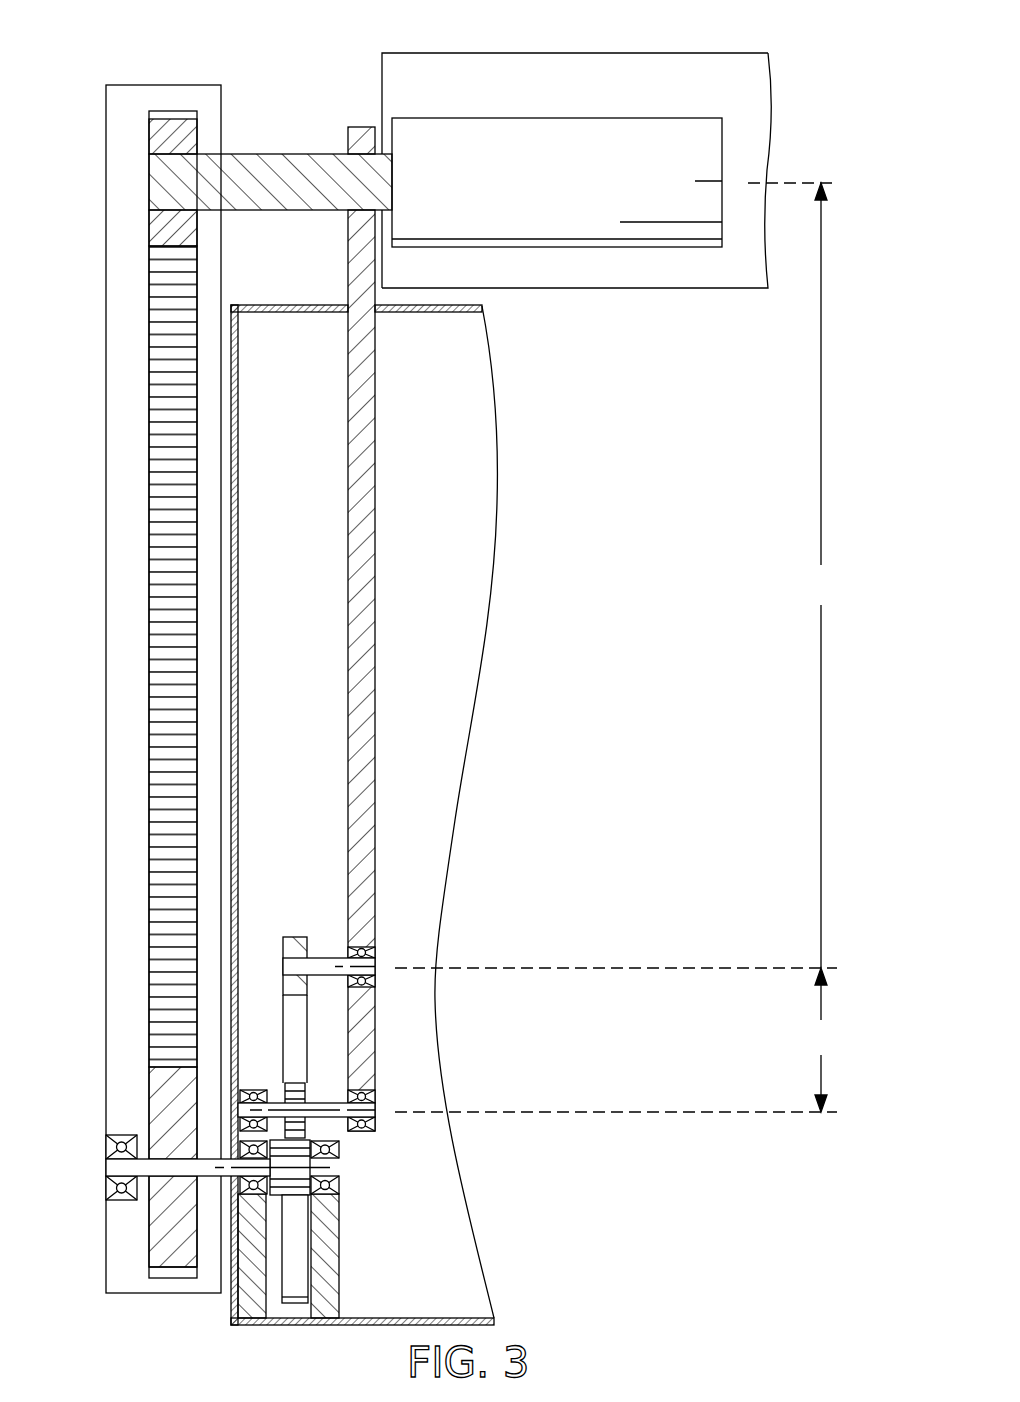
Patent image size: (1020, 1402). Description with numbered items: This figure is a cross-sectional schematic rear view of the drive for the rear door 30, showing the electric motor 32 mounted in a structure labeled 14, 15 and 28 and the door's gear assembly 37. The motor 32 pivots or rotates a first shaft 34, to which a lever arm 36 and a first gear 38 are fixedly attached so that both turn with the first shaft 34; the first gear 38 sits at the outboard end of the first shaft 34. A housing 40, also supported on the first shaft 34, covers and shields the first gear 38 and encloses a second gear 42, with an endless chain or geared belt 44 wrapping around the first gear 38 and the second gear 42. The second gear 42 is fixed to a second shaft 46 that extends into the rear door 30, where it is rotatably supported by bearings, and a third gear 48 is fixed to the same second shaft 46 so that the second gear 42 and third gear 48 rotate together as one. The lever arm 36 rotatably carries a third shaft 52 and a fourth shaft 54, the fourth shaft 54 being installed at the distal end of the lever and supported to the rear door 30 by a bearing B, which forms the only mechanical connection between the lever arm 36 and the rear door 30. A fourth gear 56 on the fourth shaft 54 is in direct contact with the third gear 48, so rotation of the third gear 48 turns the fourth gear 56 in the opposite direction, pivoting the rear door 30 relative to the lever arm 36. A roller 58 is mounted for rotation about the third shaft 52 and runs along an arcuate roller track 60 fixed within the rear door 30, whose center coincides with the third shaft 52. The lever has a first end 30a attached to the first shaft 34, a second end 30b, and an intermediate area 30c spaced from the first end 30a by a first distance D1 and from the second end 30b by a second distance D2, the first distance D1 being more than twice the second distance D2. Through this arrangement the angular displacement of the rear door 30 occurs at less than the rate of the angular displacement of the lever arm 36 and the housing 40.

The imaging apparatus 14 is at (688, 47).
The housing 15 is at (592, 52).
The wall 28 is at (772, 82).
The rear door 30 is at (444, 578).
The first end 30a is at (363, 140).
The second end 30b is at (366, 1133).
The intermediate area 30c is at (375, 938).
The electric motor 32 is at (497, 160).
The first shaft 34 is at (278, 185).
The lever arm 36 is at (360, 486).
The gear assembly 37 is at (383, 1033).
The first gear 38 is at (165, 135).
The housing 40 is at (106, 341).
The second gear 42 is at (172, 1097).
The geared belt 44 is at (157, 738).
The second shaft 46 is at (142, 1172).
The third gear 48 is at (290, 1187).
The third shaft 52 is at (325, 967).
The fourth shaft 54 is at (325, 1108).
The fourth gear 56 is at (297, 1100).
The roller 58 is at (290, 950).
The roller track 60 is at (293, 1012).
The bearing B is at (251, 1090).
The first distance D1 is at (616, 575).
The second distance D2 is at (616, 1040).